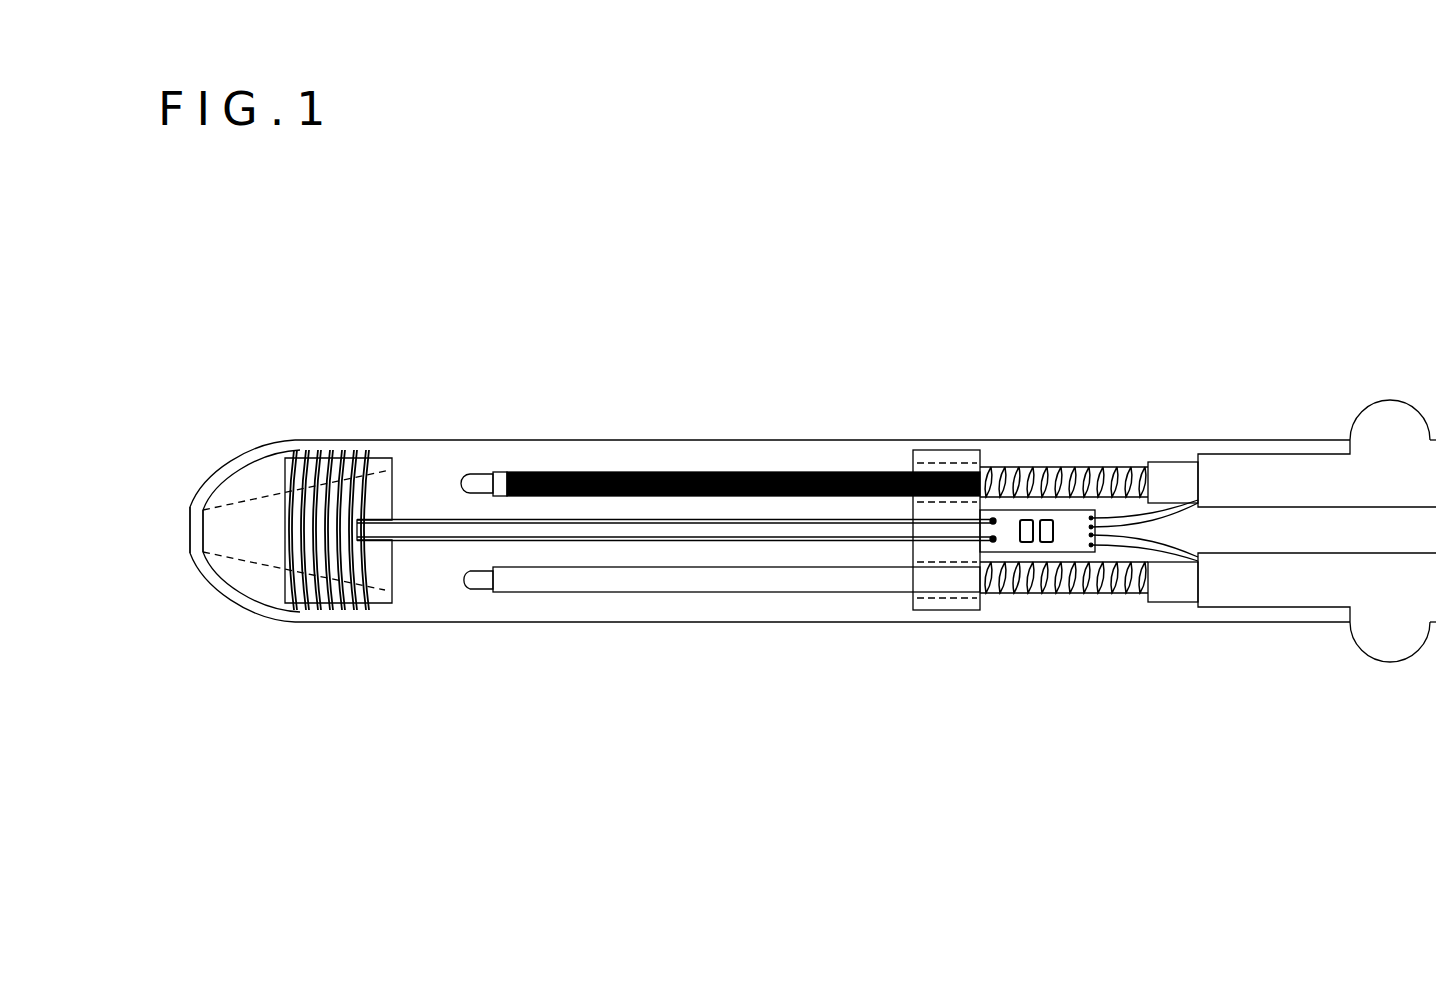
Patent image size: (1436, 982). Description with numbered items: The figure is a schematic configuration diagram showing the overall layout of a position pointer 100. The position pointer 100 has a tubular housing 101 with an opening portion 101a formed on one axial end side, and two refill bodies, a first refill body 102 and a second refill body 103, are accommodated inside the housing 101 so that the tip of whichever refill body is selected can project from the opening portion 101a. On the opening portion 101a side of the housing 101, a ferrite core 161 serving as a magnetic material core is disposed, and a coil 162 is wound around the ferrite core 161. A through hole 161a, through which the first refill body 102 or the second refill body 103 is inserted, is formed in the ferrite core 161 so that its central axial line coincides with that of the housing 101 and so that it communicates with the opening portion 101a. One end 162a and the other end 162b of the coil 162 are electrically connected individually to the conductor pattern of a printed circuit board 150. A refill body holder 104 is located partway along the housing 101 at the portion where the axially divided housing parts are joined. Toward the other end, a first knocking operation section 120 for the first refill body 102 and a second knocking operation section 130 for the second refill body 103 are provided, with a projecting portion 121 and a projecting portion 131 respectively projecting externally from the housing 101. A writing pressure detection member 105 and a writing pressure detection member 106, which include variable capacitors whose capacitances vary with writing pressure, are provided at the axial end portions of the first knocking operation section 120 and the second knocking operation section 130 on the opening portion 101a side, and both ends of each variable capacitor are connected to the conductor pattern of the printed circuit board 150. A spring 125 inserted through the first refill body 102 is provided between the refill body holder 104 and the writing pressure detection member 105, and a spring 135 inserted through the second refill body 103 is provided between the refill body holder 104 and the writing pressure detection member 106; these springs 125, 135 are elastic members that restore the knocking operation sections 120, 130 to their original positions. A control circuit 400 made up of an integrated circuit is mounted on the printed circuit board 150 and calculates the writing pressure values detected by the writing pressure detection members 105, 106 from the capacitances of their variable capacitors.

The position pointer 100 is at (1131, 431).
The housing 101 is at (583, 625).
The opening portion 101a is at (192, 530).
The first refill body 102 is at (708, 470).
The second refill body 103 is at (698, 594).
The refill body holder 104 is at (935, 602).
The writing pressure detection member 105 is at (1178, 472).
The writing pressure detection member 106 is at (1173, 590).
The first knocking operation section 120 is at (1285, 470).
The projecting portion 121 is at (1392, 406).
The spring 125 is at (1088, 466).
The second knocking operation section 130 is at (1290, 605).
The projecting portion 131 is at (1392, 655).
The spring 135 is at (1090, 596).
The printed circuit board 150 is at (1012, 548).
The ferrite core 161 is at (257, 585).
The through hole 161a is at (262, 523).
The coil 162 is at (333, 604).
The one end of coil 162a is at (430, 519).
The other end of coil 162b is at (430, 542).
The control circuit 400 is at (1026, 518).